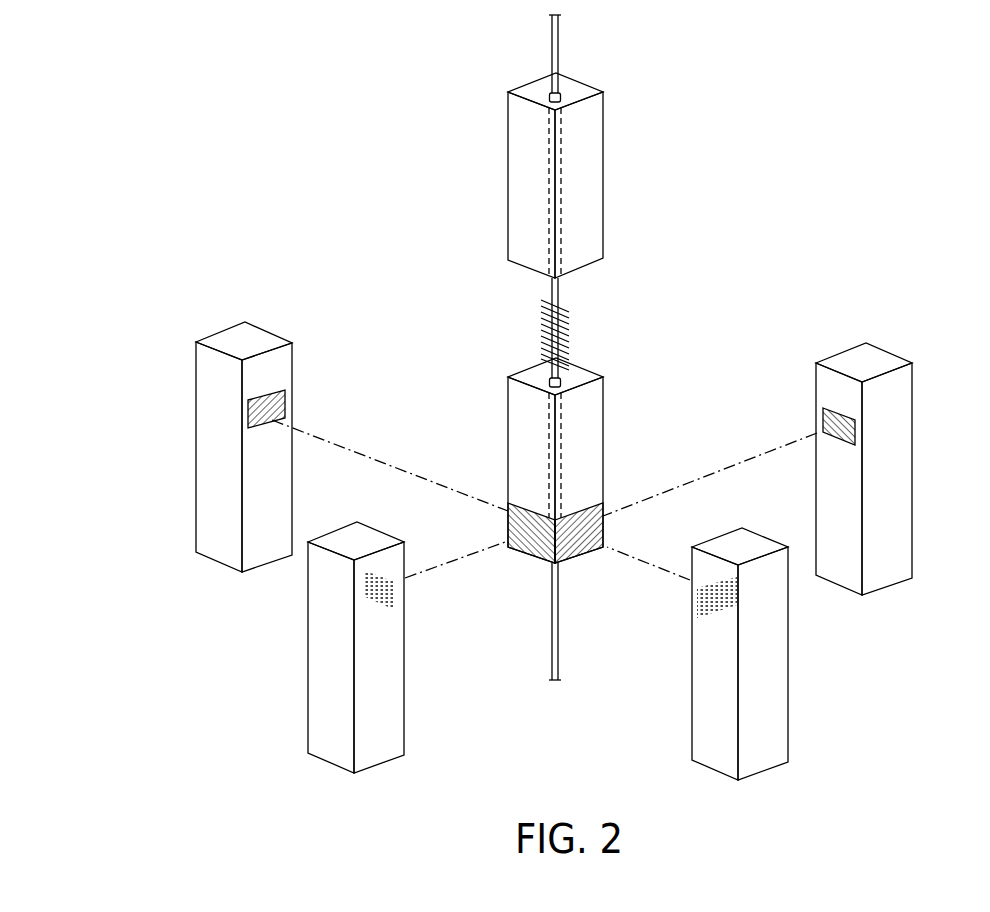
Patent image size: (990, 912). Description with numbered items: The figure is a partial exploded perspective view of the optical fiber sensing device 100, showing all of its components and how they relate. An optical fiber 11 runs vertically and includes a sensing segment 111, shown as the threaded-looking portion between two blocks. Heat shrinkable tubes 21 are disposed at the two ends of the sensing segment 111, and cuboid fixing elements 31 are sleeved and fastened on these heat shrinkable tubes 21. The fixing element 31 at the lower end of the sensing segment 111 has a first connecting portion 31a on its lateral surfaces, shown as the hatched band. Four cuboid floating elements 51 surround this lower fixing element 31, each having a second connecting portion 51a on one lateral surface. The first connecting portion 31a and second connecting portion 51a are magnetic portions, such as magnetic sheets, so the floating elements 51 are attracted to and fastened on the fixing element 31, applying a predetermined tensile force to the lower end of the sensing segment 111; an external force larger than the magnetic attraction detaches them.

The optical fiber sensing device 100 is at (973, 110).
The optical fiber 11 is at (552, 637).
The sensing segment 111 is at (570, 328).
The heat shrinkable tube 21 is at (558, 183).
The fixing element 31 is at (600, 117).
The first connecting portion 31a is at (583, 557).
The floating element 51 is at (210, 474).
The second connecting portion 51a is at (285, 400).